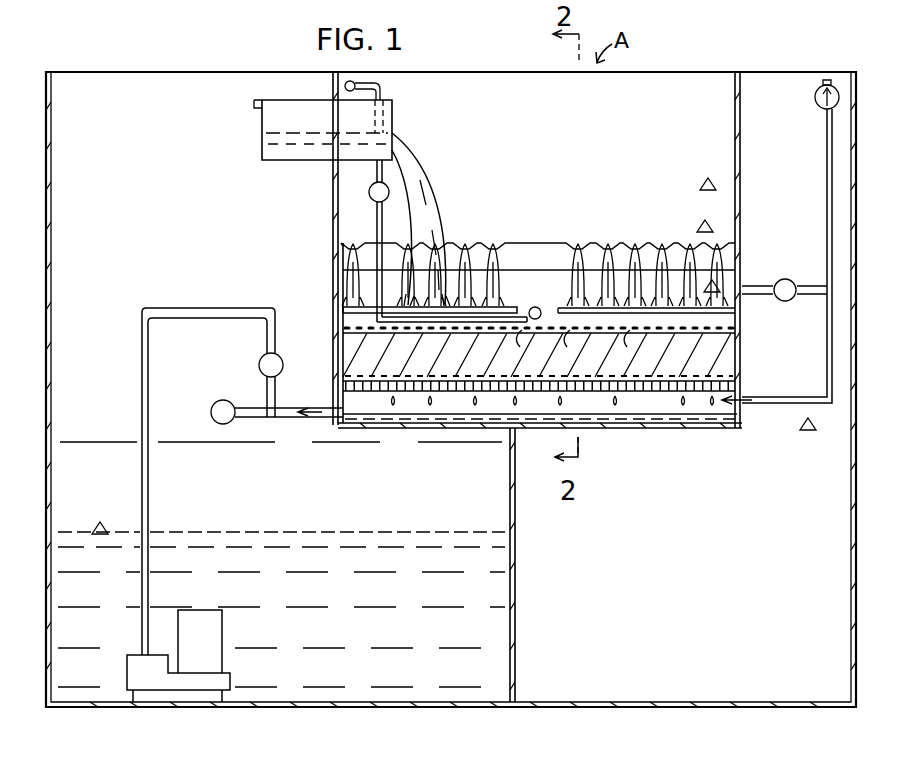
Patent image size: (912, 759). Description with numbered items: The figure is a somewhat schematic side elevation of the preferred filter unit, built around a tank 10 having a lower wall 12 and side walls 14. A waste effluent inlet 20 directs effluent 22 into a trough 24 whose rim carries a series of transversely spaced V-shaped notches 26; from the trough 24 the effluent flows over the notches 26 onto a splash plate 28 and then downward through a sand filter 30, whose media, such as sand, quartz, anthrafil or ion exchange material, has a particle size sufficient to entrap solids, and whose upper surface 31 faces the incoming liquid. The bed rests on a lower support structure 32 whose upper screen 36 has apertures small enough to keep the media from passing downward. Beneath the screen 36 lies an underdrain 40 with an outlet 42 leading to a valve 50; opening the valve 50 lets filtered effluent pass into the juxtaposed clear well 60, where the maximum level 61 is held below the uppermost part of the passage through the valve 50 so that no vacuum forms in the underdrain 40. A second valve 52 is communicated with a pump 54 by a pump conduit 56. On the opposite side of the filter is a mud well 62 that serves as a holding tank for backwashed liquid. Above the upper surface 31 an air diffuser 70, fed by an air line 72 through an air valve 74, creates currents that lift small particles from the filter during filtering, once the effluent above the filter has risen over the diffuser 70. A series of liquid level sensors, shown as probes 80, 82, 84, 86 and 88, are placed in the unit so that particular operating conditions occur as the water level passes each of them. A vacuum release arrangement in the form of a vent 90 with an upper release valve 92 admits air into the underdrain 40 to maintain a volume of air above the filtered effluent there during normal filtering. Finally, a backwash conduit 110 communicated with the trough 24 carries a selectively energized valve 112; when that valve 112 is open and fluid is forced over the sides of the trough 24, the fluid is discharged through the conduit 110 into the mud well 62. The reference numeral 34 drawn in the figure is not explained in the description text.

The tank 10 is at (760, 100).
The lower wall 12 is at (618, 428).
The side walls 14 is at (333, 190).
The waste effluent inlet 20 is at (392, 133).
The effluent 22 is at (432, 193).
The trough 24 is at (548, 240).
The V-shaped notches 26 is at (494, 243).
The splash plate 28 is at (360, 303).
The sand filter 30 is at (345, 352).
The upper surface 31 is at (736, 319).
The lower support structure 32 is at (567, 399).
The drainage drips 34 is at (632, 387).
The upper screen 36 is at (385, 386).
The underdrain 40 is at (540, 439).
The outlet 42 is at (300, 419).
The valve 50 is at (223, 424).
The second valve 52 is at (259, 366).
The pump 54 is at (222, 634).
The pump conduit 56 is at (148, 513).
The clear well 60 is at (60, 591).
The maximum level 61 is at (440, 444).
The mud well 62 is at (694, 700).
The air diffuser 70 is at (535, 307).
The air line 72 is at (377, 219).
The air valve 74 is at (369, 191).
The probe 80 is at (718, 288).
The probe 82 is at (703, 226).
The probe 84 is at (704, 181).
The probe 86 is at (101, 522).
The probe 88 is at (808, 436).
The vent 90 is at (827, 189).
The upper release valve 92 is at (822, 87).
The backwash conduit 110 is at (772, 295).
The valve 112 is at (800, 268).